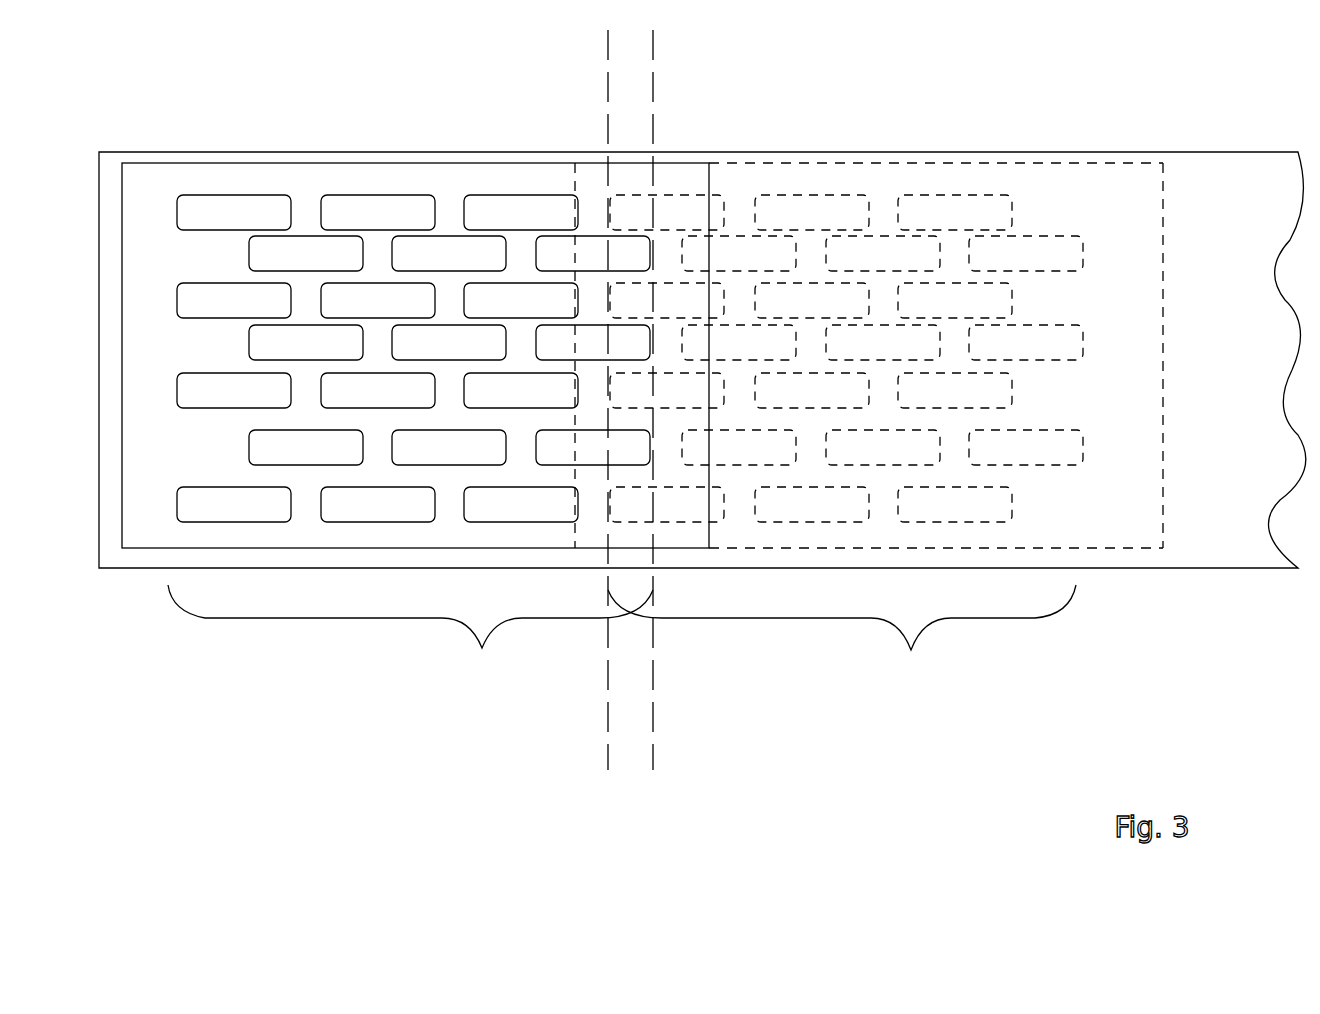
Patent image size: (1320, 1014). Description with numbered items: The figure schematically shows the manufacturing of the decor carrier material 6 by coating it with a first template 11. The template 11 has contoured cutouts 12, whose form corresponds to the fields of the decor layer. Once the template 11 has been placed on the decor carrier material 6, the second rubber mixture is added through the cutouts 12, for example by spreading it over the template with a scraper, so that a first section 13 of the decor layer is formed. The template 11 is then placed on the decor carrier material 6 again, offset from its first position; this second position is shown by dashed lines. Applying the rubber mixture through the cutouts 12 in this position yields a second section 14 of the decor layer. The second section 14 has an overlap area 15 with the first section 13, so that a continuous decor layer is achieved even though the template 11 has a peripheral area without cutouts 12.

The decor carrier material 6 is at (692, 553).
The first template 11 is at (369, 533).
The contoured cutouts 12 is at (361, 213).
The first section 13 is at (410, 639).
The second section 14 is at (842, 639).
The overlap area 15 is at (608, 773).